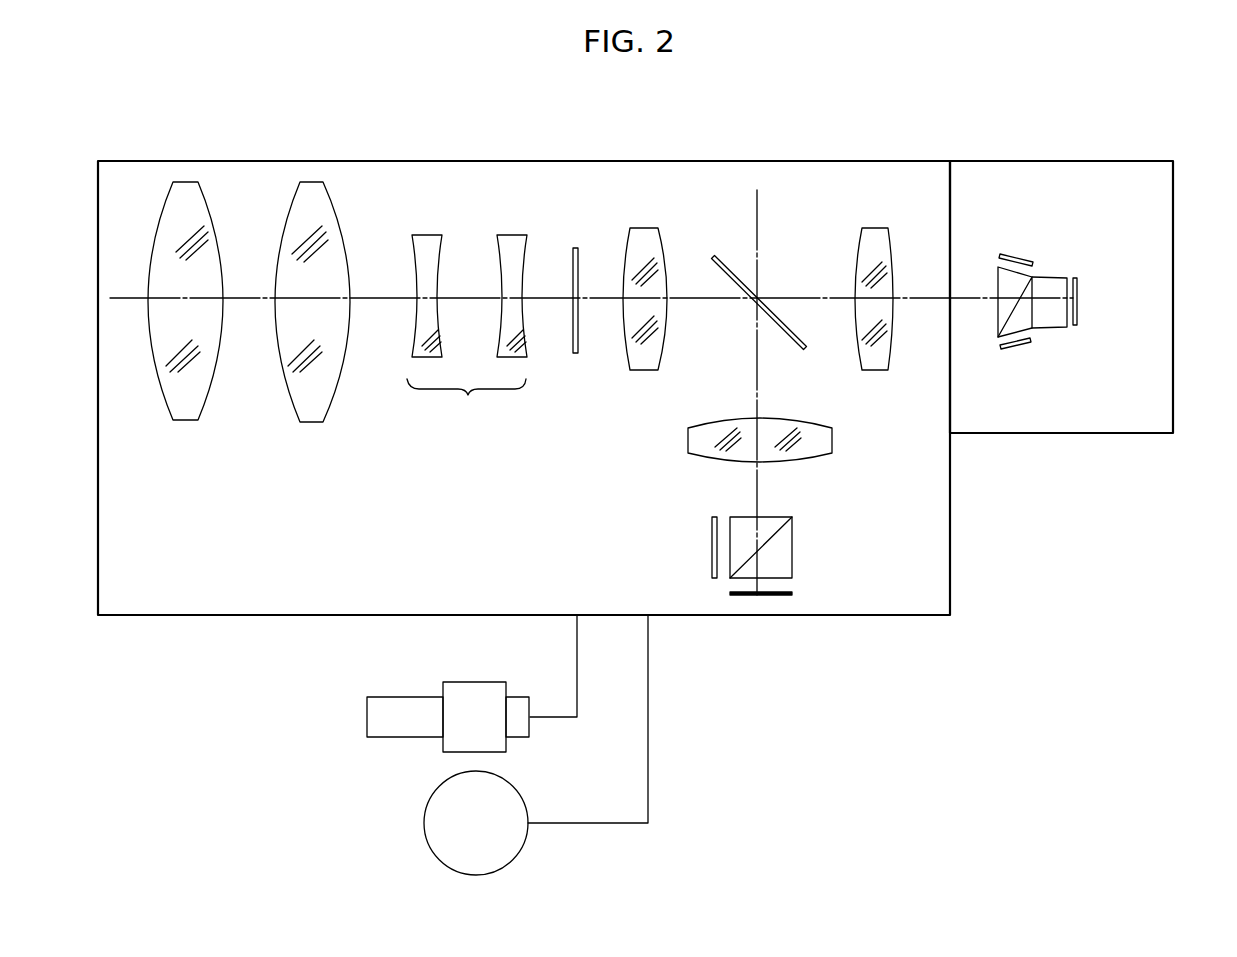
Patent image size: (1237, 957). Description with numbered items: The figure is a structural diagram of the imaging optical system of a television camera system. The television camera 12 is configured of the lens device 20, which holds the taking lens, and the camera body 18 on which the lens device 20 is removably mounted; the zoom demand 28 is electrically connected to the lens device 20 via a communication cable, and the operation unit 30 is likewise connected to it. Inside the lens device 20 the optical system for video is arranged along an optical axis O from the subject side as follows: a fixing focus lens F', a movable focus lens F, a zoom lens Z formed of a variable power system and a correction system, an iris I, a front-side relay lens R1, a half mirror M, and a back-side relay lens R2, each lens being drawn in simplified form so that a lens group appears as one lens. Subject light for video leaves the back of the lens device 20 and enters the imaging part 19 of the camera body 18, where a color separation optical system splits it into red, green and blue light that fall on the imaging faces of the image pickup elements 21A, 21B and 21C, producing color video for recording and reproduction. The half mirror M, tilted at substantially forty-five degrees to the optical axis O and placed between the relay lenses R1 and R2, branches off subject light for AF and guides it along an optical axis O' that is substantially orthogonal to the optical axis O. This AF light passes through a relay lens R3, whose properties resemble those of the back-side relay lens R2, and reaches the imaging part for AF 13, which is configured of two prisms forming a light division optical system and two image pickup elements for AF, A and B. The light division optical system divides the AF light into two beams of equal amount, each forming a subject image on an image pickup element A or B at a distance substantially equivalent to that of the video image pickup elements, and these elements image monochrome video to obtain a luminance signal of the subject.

The television camera 12 is at (1163, 127).
The camera body 18 is at (1140, 158).
The lens device 20 is at (825, 159).
The imaging part 19 is at (998, 247).
The image pickup element 21A is at (1080, 300).
The image pickup element 21B is at (1015, 348).
The image pickup element 21C is at (1017, 255).
The imaging part for AF 13 is at (807, 503).
The zoom demand 28 is at (387, 738).
The operation unit 30 is at (423, 840).
The optical axis O is at (591, 245).
The optical axis O' is at (704, 392).
The fixing focus lens F' is at (185, 344).
The movable focus lens F is at (312, 344).
The zoom lens Z is at (467, 332).
The iris I is at (578, 337).
The front-side relay lens R1 is at (646, 228).
The half mirror M is at (731, 259).
The back-side relay lens R2 is at (877, 228).
The relay lens R3 is at (833, 440).
The image pickup element for AF B is at (708, 532).
The image pickup element for AF A is at (785, 597).